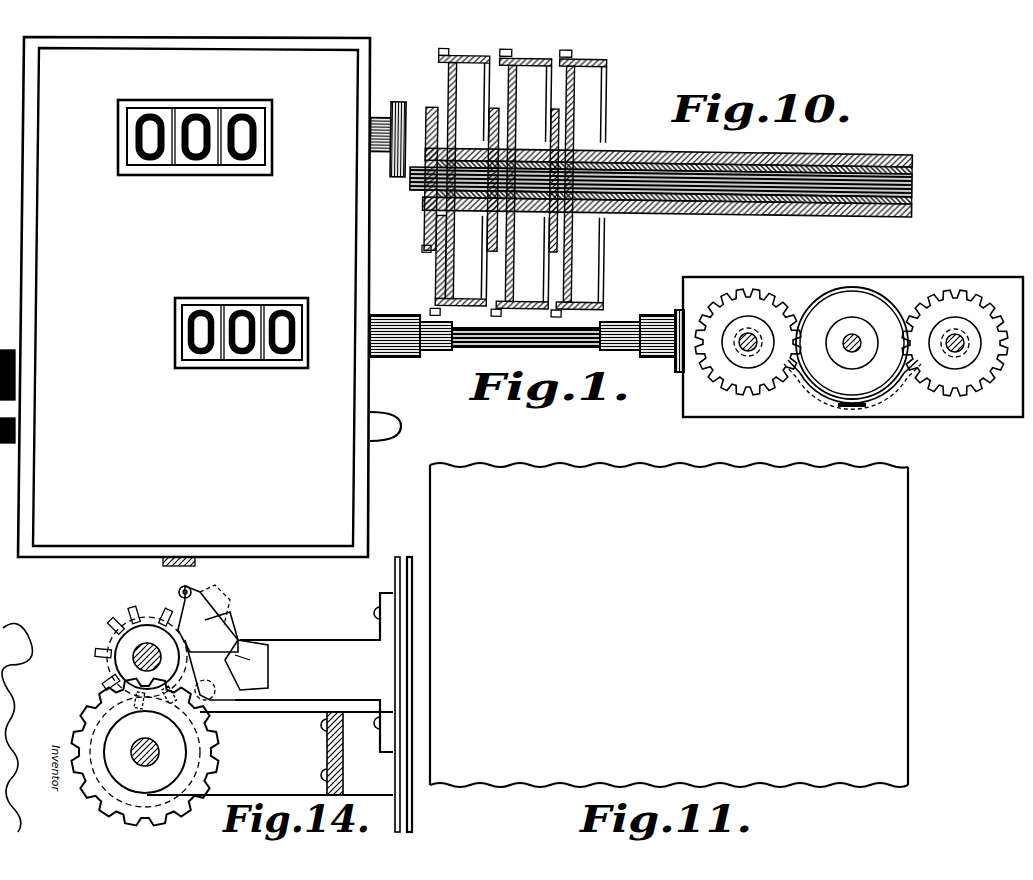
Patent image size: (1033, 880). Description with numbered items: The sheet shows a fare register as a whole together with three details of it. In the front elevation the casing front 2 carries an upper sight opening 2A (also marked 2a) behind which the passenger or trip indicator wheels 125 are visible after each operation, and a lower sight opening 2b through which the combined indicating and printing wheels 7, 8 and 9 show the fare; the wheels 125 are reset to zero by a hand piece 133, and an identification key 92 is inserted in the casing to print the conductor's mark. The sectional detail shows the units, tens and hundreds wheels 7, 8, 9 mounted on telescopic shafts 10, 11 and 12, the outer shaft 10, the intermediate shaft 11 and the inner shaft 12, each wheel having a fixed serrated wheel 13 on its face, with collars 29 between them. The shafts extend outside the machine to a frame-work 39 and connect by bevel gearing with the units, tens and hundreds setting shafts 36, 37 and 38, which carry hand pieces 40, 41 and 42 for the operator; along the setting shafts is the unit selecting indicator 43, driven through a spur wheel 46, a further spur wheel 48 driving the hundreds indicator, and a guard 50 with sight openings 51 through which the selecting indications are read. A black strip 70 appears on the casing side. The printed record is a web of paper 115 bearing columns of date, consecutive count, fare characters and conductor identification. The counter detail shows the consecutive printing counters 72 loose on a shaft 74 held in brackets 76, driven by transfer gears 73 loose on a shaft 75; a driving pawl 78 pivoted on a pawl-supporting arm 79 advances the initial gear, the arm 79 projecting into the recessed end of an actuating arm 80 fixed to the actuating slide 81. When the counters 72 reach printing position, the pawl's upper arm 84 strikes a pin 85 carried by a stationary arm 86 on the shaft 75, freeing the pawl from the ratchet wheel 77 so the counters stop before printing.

In FIG. 1, the casing side part 2 is at (194, 301).
In FIG. 1, the upper sight opening 2a is at (214, 121).
In FIG. 1, the sight opening 2b is at (212, 346).
In FIG. 1, the passenger or trip indicator wheels 125 is at (240, 112).
In FIG. 1, the combined indicating and printing wheel 9 is at (201, 358).
In FIG. 10, the combined indicating and printing wheel 9 is at (462, 170).
In FIG. 1, the combined indicating and printing wheel 8 is at (243, 358).
In FIG. 10, the combined indicating and printing wheel 8 is at (524, 172).
In FIG. 1, the combined indicating and printing wheel 7 is at (285, 358).
In FIG. 10, the combined indicating and printing wheel 7 is at (581, 173).
In FIG. 1, the indicator strip 70 is at (10, 349).
In FIG. 1, the upper sight opening 2A is at (385, 426).
In FIG. 1, the identification key 92 is at (380, 441).
In FIG. 1, the outer telescopic shaft 10 is at (397, 358).
In FIG. 10, the outer telescopic shaft 10 is at (644, 152).
In FIG. 1, the intermediate telescopic shaft 11 is at (438, 351).
In FIG. 10, the intermediate telescopic shaft 11 is at (706, 157).
In FIG. 1, the inner telescopic shaft 12 is at (528, 347).
In FIG. 10, the inner telescopic shaft 12 is at (912, 185).
In FIG. 10, the serrated wheel 13 is at (425, 238).
In FIG. 10, the spacing collar 29 is at (440, 50).
In FIG. 10, the hand piece 133 is at (398, 101).
In FIG. 1, the frame-work 39 is at (722, 268).
In FIG. 1, the units setting shaft 36 is at (748, 342).
In FIG. 1, the tens setting shaft 37 is at (852, 343).
In FIG. 1, the hundreds setting shaft 38 is at (955, 343).
In FIG. 1, the hand piece 40 is at (750, 355).
In FIG. 1, the hand piece 41 is at (852, 355).
In FIG. 1, the hand piece 42 is at (957, 356).
In FIG. 1, the unit selecting indicator 43 is at (882, 303).
In FIG. 1, the spur wheel 46 is at (722, 372).
In FIG. 1, the spur wheel 48 is at (992, 365).
In FIG. 1, the guard 50 is at (900, 398).
In FIG. 1, the sight openings 51 is at (848, 410).
In FIG. 11, the web of paper 115 is at (648, 478).
In FIG. 14, the consecutive printing counters 72 is at (156, 753).
In FIG. 14, the transfer or driving gears 73 is at (123, 657).
In FIG. 14, the shaft 74 is at (160, 752).
In FIG. 14, the shaft 75 is at (130, 660).
In FIG. 14, the brackets 76 is at (270, 753).
In FIG. 14, the ratchet wheel 77 is at (179, 587).
In FIG. 14, the driving pawl 78 is at (225, 632).
In FIG. 14, the pawl-supporting arm 79 is at (246, 665).
In FIG. 14, the actuating arm 80 is at (314, 672).
In FIG. 14, the actuating slide or member 81 is at (393, 588).
In FIG. 14, the upper arm of pawl 84 is at (218, 612).
In FIG. 14, the pin 85 is at (210, 596).
In FIG. 14, the stationary arm 86 is at (190, 590).